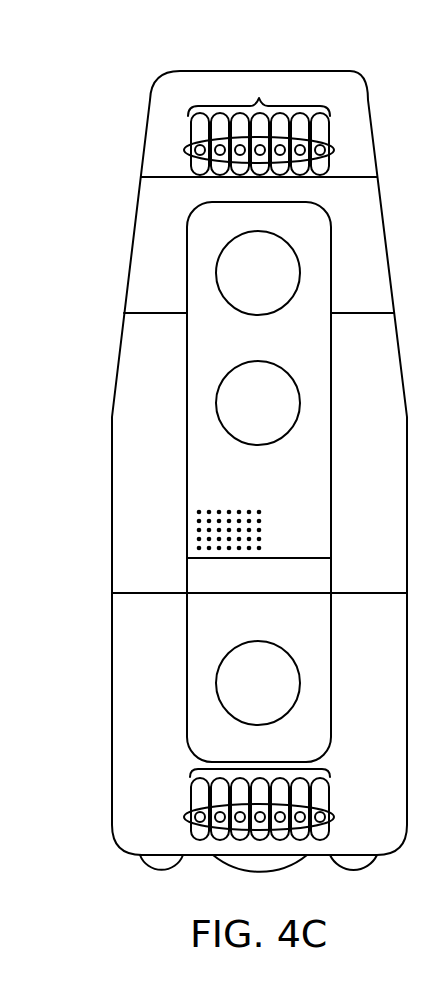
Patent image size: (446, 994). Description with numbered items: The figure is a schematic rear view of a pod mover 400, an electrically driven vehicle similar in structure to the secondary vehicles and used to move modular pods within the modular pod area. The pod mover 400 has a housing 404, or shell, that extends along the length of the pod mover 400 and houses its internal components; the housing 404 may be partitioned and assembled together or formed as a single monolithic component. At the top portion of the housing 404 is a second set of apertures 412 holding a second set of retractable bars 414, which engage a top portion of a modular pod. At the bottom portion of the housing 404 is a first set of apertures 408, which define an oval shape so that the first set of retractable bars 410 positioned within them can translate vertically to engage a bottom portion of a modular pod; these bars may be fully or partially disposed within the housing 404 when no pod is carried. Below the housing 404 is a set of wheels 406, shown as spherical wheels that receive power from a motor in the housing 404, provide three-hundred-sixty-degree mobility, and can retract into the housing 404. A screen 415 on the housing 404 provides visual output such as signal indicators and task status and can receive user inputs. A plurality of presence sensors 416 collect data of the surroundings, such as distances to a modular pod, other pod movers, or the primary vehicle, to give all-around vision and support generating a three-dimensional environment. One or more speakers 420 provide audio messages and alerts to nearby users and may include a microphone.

The pod mover 400 is at (232, 70).
The housing 404 is at (128, 235).
The set of wheels 406 is at (335, 866).
The first set of apertures 408 is at (295, 748).
The first set of retractable bars 410 is at (334, 817).
The second set of apertures 412 is at (259, 123).
The second set of retractable bars 414 is at (334, 150).
The screen 415 is at (120, 397).
The plurality of presence sensors 416 is at (300, 272).
The one or more speakers 420 is at (226, 511).